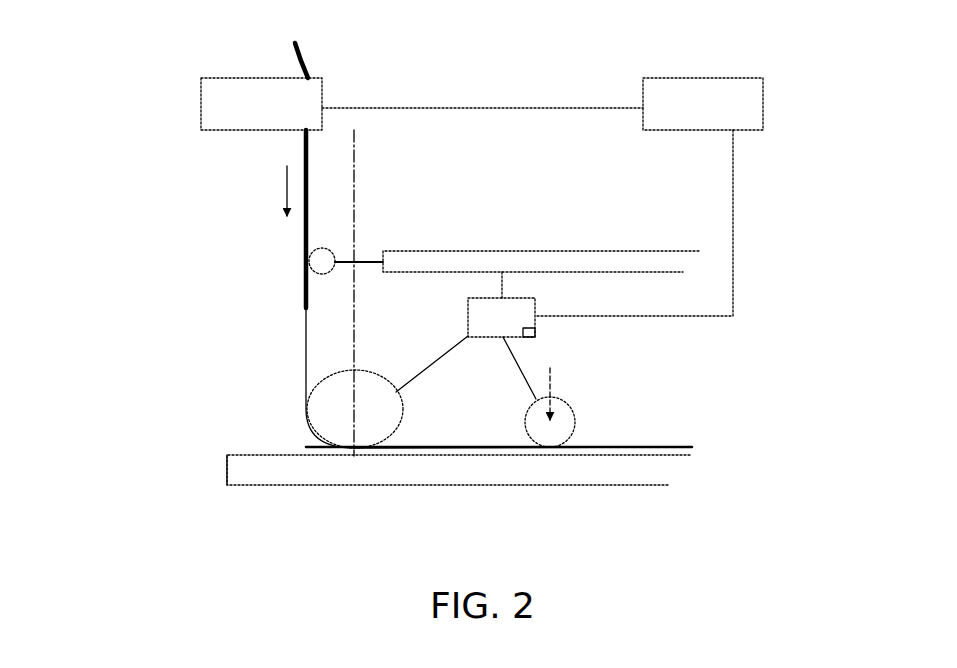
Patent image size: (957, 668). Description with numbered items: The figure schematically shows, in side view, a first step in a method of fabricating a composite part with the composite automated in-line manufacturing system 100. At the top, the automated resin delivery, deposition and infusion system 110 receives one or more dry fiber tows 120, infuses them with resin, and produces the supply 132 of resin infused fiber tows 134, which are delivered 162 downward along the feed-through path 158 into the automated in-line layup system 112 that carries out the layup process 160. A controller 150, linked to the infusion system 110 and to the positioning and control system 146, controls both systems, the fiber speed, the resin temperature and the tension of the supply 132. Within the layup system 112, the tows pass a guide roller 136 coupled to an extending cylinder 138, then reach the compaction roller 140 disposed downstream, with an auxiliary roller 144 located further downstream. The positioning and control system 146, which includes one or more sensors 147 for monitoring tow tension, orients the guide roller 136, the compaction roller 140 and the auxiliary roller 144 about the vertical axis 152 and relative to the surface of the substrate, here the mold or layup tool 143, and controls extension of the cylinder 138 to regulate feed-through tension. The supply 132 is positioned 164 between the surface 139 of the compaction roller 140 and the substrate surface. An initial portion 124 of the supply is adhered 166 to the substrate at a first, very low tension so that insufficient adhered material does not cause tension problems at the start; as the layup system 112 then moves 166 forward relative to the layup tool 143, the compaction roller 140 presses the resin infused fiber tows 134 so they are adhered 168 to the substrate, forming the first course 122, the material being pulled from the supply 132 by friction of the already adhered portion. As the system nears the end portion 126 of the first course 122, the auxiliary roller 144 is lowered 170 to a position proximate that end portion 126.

The composite automated in-line manufacturing system 100 is at (841, 165).
The automated resin delivery, deposition and infusion system 110 is at (252, 87).
The automated in-line layup system 112 is at (543, 185).
The dry fiber tows 120 is at (310, 67).
The first course 122 is at (483, 427).
The initial portion 124 is at (692, 442).
The end portion 126 is at (423, 433).
The supply 132 is at (310, 225).
The resin infused fiber tows 134 is at (310, 177).
The guide roller 136 is at (315, 268).
The extending cylinder 138 is at (468, 257).
The surface of the compaction roller 139 is at (335, 372).
The compaction roller 140 is at (413, 407).
The layup tool 143 is at (705, 481).
The auxiliary roller 144 is at (577, 418).
The positioning and control system 146 is at (527, 315).
The sensors 147 is at (543, 337).
The controller 150 is at (733, 78).
The vertical axis 152 is at (358, 181).
The feed-through path 158 is at (282, 193).
The layup process 160 is at (137, 264).
The delivery of the resin infused fiber tows 162 is at (265, 180).
The positioning of the supply 164 is at (293, 427).
The adhering of the initial portion / forward movement 166 is at (300, 322).
The adhering of the fiber tows 168 is at (660, 446).
The lowering of the auxiliary roller 170 is at (553, 370).